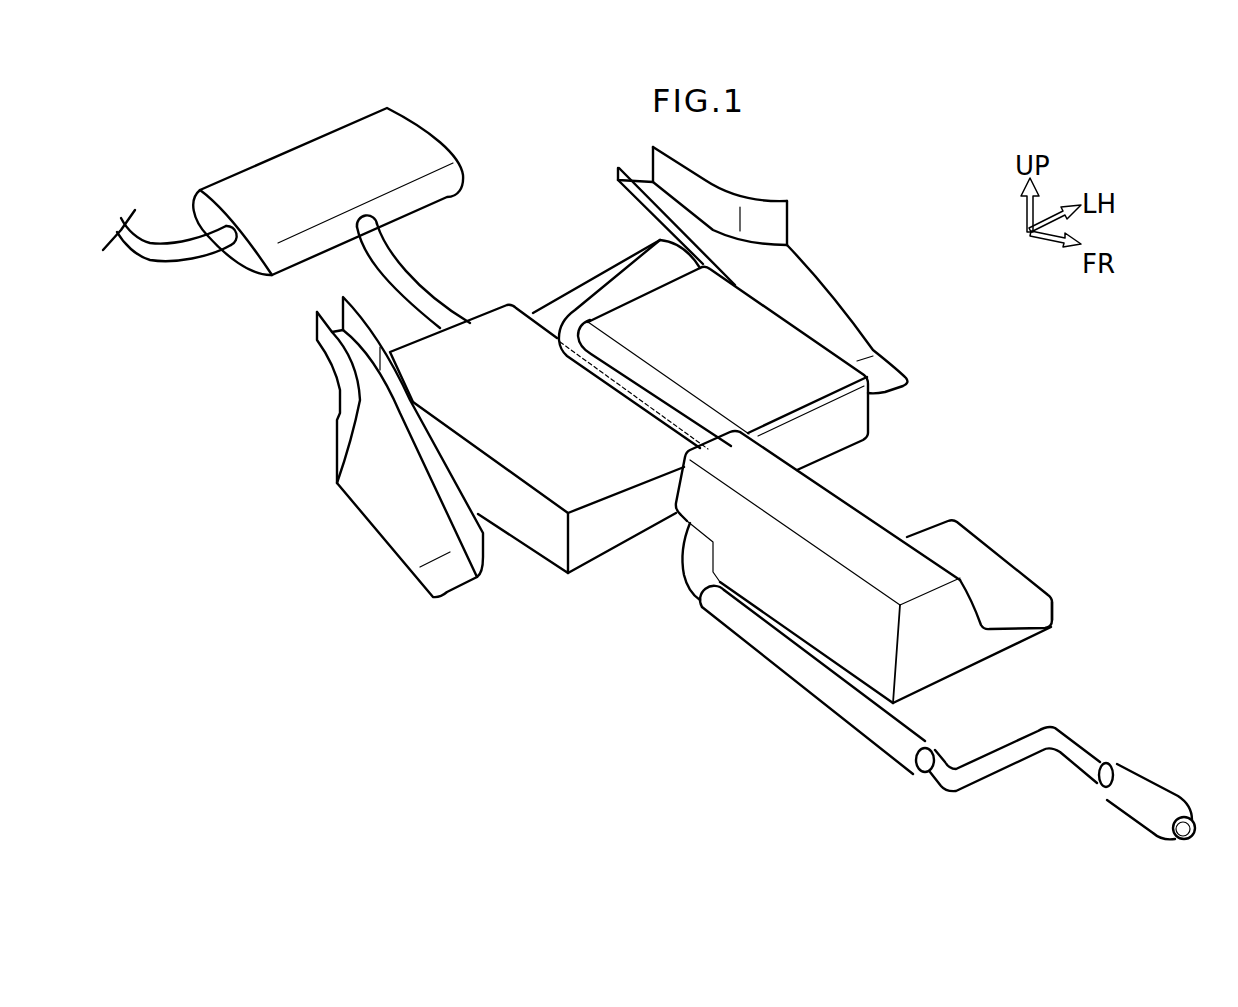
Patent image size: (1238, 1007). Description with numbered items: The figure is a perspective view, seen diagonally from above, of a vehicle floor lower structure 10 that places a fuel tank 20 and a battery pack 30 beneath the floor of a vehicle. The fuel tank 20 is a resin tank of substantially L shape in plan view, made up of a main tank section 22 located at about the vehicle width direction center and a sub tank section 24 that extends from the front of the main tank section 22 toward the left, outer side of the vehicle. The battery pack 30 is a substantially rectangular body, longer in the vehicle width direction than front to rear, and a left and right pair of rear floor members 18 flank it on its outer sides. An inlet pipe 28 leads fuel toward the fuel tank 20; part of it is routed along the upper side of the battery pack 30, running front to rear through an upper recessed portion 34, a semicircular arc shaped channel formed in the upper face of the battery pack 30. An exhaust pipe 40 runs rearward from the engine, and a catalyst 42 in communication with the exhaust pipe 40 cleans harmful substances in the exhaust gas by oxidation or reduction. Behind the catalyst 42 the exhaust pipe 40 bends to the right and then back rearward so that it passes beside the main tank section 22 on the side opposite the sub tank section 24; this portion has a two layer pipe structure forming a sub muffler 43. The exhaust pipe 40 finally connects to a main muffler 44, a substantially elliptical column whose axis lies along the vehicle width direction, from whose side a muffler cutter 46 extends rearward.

The vehicle floor lower structure 10 is at (665, 491).
The rear floor members 18 is at (803, 300).
The fuel tank 20 is at (910, 565).
The main tank section 22 is at (917, 576).
The sub tank section 24 is at (1047, 616).
The inlet pipe 28 is at (643, 285).
The battery pack 30 is at (568, 575).
The upper recessed portion 34 is at (672, 394).
The exhaust pipe 40 is at (999, 773).
The catalyst 42 is at (1143, 788).
The sub muffler 43 is at (791, 677).
The main muffler 44 is at (433, 134).
The muffler cutter 46 is at (164, 259).